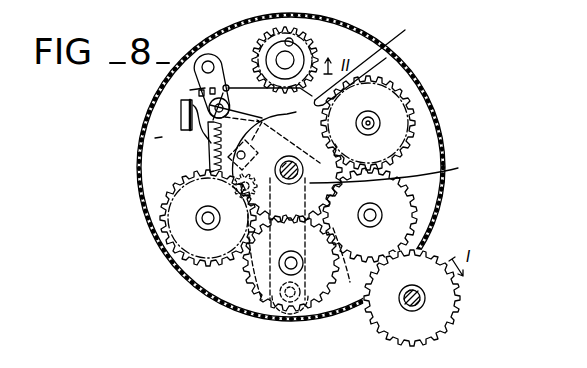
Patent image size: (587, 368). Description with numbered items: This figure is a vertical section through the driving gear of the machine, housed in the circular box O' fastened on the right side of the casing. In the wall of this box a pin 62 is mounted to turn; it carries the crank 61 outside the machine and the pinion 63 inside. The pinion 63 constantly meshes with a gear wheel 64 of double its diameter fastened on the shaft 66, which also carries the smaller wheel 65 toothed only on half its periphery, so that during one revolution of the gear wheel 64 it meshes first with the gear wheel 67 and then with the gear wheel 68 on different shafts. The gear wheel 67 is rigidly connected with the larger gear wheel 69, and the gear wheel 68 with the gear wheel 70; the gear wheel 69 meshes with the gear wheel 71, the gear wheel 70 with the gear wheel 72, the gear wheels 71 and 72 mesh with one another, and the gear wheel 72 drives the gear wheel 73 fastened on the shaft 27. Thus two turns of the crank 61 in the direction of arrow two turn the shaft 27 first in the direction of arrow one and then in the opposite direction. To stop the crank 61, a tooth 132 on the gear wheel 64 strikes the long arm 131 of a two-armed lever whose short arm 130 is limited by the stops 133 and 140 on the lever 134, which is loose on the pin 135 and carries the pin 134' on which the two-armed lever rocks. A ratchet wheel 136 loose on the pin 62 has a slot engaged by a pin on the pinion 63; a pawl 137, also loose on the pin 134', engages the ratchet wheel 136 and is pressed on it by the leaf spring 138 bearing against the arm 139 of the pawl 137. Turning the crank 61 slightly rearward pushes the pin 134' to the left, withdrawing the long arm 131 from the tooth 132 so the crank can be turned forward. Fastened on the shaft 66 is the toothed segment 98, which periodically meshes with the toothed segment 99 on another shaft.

The pin 62 is at (240, 31).
The pinion 63 is at (320, 58).
The ratchet wheel 136 is at (314, 33).
The gear wheel 64 is at (370, 58).
The wheel 65 is at (386, 58).
The gear wheel 68 is at (417, 89).
The gear wheel 70 is at (432, 125).
The circular box O' is at (433, 135).
The gear wheel 72 is at (412, 219).
The shaft 66 is at (395, 169).
The gear wheel 67 is at (157, 219).
The gear wheel 69 is at (163, 254).
The gear wheel 71 is at (243, 291).
The crank 61 is at (318, 326).
The toothed segment 99 is at (262, 302).
The toothed segment 98 is at (350, 284).
The gear wheel 73 is at (443, 318).
The shaft 27 is at (421, 298).
The long arm 131 is at (283, 125).
The tooth 132 is at (303, 168).
The pawl 137 is at (264, 124).
The stop 140 is at (231, 78).
The pin 135 is at (205, 58).
The short arm 130 is at (190, 112).
The stop 133 is at (200, 97).
The lever 134 is at (156, 88).
The pin 134' is at (129, 148).
The leaf spring 138 is at (214, 129).
The arm 139 is at (213, 153).